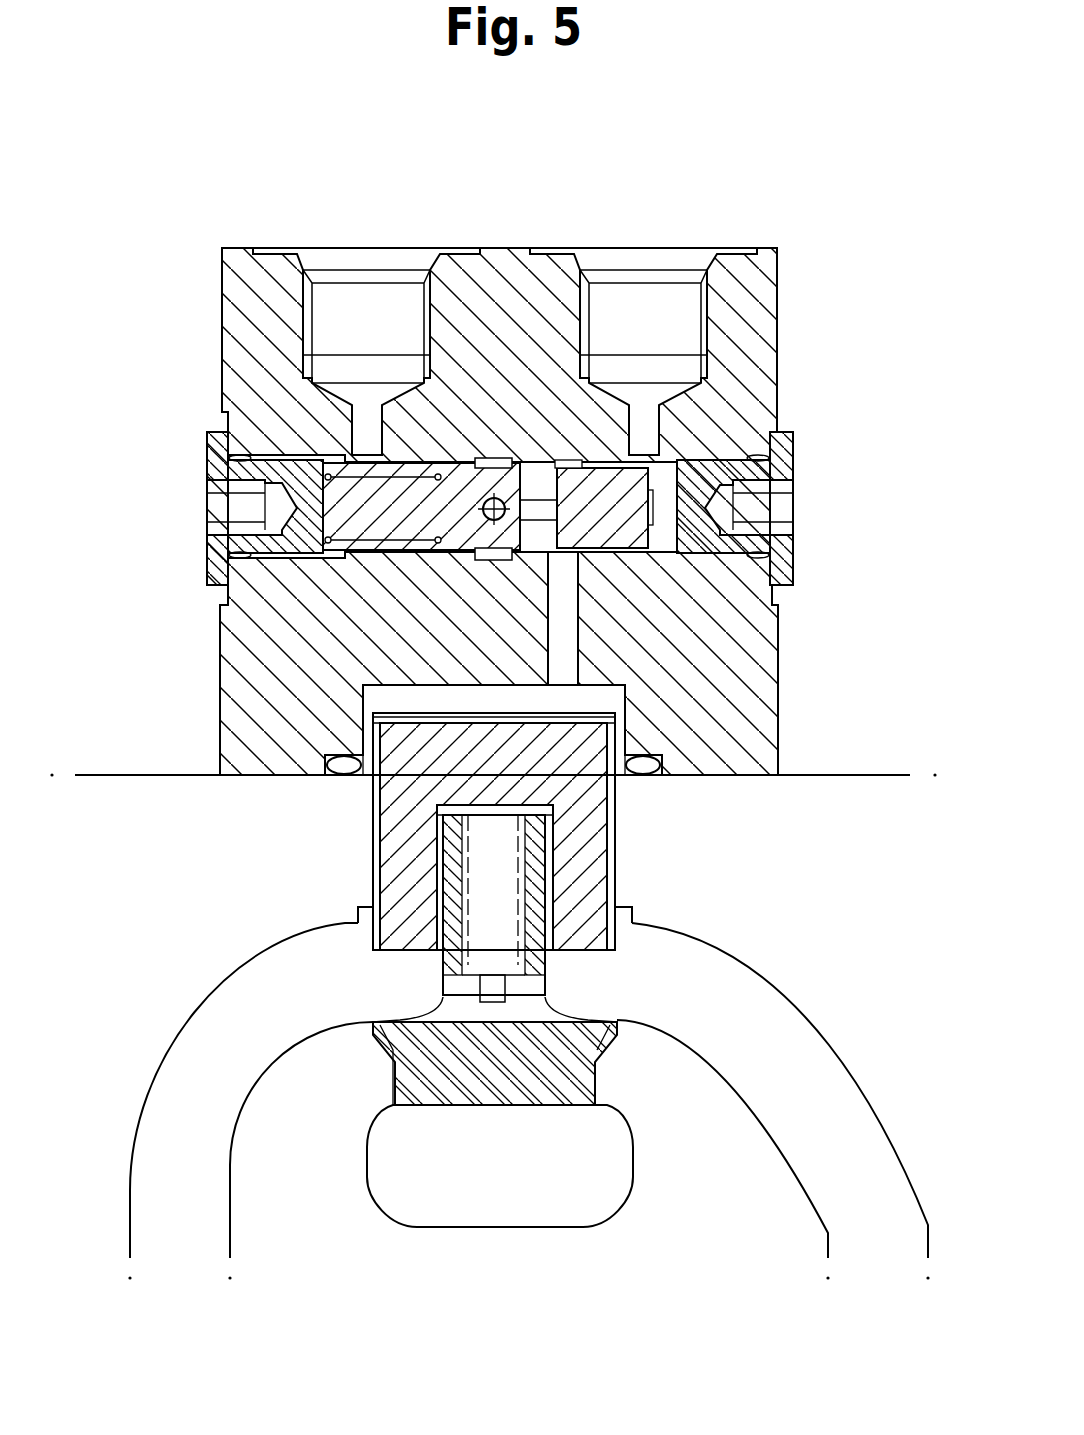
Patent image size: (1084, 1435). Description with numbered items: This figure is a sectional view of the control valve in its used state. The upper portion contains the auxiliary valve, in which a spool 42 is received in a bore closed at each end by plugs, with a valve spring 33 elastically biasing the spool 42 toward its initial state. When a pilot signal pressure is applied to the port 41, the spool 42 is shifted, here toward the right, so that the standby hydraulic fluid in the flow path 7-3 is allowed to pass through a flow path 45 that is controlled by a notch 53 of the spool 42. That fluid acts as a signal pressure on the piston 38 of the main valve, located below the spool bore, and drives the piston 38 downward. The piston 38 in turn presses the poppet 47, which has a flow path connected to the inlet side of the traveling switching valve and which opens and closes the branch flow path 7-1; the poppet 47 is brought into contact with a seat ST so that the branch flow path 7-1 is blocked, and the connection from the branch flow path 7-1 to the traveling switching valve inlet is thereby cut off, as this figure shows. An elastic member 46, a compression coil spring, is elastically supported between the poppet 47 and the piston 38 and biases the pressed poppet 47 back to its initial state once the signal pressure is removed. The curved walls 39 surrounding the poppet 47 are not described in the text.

The port 41 is at (638, 300).
The notch 53 is at (519, 493).
The spool 42 is at (626, 490).
The valve spring 33 is at (382, 540).
The flow path 7-3 is at (485, 516).
The flow path 45 is at (567, 630).
The elastic member 46 is at (524, 892).
The piston 38 is at (588, 873).
The poppet 47 is at (532, 1018).
The bellows 39 is at (777, 1037).
The seat ST is at (720, 1147).
The branch flow path 7-1 is at (498, 1203).